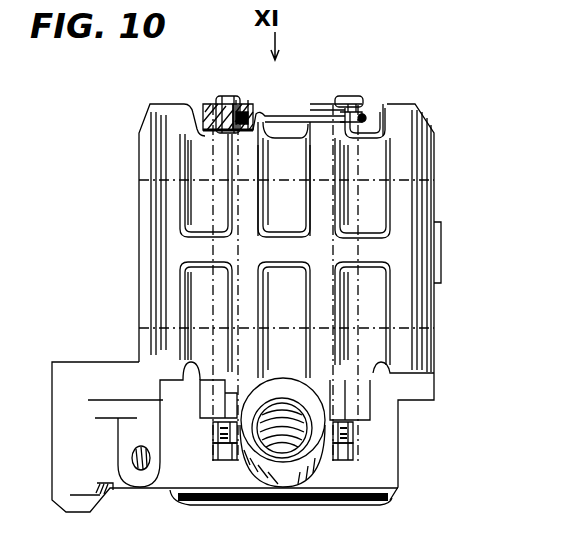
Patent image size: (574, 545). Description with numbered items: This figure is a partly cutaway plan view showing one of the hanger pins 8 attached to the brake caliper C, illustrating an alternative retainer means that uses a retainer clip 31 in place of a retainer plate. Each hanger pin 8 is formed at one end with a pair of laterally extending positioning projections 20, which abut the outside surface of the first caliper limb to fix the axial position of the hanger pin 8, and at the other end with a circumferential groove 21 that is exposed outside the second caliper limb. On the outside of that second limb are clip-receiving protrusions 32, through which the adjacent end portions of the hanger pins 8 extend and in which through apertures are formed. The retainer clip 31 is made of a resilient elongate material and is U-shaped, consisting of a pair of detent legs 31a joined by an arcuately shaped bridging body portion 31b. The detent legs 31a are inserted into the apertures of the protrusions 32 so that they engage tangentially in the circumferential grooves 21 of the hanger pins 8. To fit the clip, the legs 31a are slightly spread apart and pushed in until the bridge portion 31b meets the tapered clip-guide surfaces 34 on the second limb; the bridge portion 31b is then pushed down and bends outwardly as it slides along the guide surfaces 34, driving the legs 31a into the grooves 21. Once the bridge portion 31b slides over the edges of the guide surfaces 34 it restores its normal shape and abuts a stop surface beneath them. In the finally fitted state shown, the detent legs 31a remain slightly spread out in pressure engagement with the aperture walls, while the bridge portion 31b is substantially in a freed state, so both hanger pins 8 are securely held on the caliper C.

The brake caliper C is at (442, 116).
The hanger pin 8 is at (215, 453).
The positioning projection 20 is at (212, 433).
The circumferential groove 21 is at (228, 130).
The retainer clip 31 is at (284, 113).
The detent leg 31a is at (203, 112).
The bridging body portion 31b is at (283, 86).
The clip-receiving protrusion 32 is at (209, 105).
The tapered clip-guide surface 34 is at (312, 160).